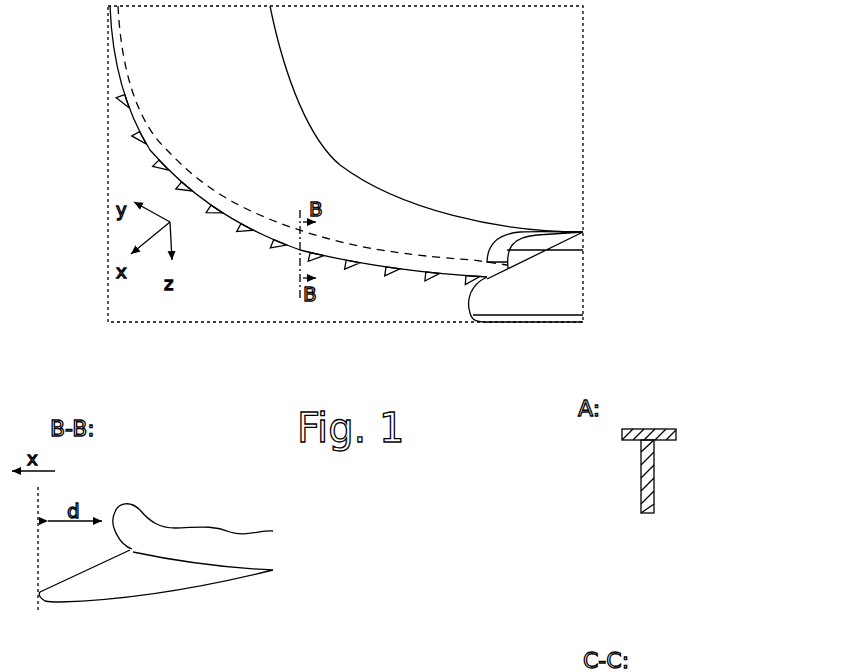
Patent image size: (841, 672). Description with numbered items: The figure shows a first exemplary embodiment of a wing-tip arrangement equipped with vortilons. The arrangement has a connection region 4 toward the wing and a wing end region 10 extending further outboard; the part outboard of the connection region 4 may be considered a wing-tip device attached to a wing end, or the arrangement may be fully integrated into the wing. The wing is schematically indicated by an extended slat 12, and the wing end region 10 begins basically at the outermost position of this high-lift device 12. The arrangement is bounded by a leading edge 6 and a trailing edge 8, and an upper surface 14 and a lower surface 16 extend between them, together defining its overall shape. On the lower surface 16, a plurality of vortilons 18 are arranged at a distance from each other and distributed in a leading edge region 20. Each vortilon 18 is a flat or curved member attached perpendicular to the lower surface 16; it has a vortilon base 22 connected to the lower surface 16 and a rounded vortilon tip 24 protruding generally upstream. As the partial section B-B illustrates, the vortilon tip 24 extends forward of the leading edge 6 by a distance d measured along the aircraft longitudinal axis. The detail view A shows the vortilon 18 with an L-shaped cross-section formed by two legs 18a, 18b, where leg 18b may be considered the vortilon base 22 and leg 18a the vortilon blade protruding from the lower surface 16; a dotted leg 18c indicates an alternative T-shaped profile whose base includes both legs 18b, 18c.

The connection region 4 is at (517, 225).
The leading edge 6 is at (128, 103).
The trailing edge 8 is at (312, 125).
The wing end region 10 is at (557, 210).
The extended slat 12 is at (531, 302).
The upper surface 14 is at (258, 130).
The lower surface 16 is at (235, 238).
The vortilon 18 is at (148, 152).
The leg (vortilon blade) 18a is at (665, 450).
The leg (vortilon base) 18b is at (630, 442).
The leg 18c is at (662, 427).
The leading edge region 20 is at (293, 192).
The vortilon base 22 is at (358, 256).
The vortilon tip 24 is at (357, 263).